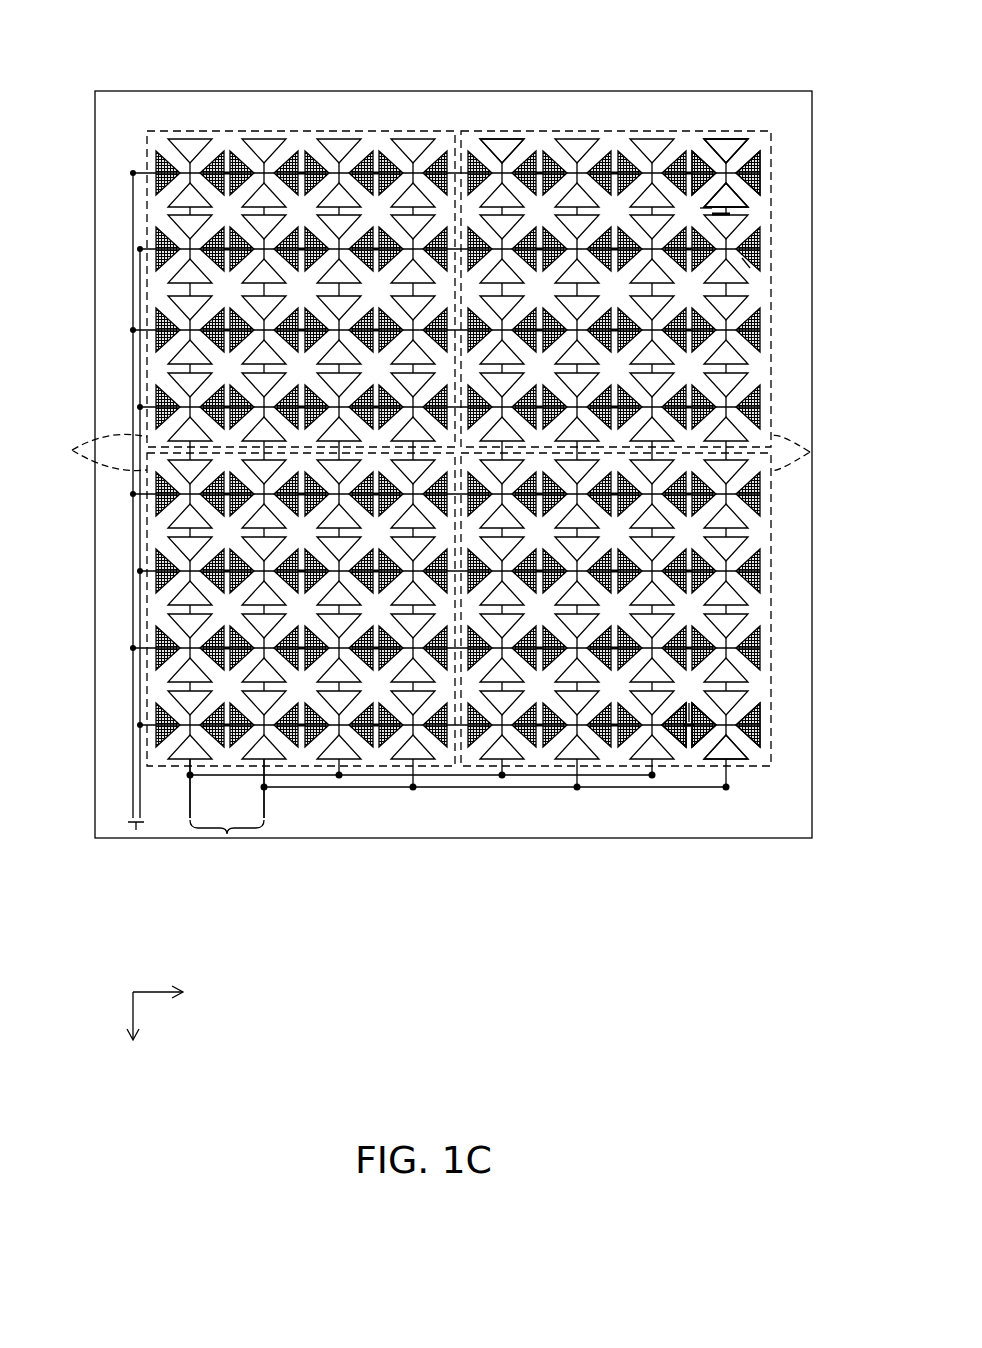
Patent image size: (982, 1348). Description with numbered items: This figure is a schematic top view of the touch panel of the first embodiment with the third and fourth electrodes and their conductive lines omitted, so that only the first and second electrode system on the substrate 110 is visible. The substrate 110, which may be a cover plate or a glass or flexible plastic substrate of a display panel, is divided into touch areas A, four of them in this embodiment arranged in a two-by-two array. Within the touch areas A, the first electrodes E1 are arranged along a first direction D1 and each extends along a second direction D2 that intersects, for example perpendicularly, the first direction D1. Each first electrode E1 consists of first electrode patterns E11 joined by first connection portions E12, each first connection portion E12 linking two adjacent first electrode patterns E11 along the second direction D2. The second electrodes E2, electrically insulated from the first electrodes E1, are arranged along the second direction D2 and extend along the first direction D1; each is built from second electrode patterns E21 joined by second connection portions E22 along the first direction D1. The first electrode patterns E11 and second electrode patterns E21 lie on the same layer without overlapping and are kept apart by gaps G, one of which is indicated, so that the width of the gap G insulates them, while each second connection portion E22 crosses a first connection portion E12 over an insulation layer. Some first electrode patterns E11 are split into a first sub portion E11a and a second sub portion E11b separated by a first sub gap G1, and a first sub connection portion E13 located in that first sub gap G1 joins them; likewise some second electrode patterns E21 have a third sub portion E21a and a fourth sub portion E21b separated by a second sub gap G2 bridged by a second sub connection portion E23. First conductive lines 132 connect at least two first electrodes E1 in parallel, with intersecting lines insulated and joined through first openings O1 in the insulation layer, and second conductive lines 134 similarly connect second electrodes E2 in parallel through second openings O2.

The substrate 110 is at (119, 96).
The first conductive lines 132 is at (137, 831).
The second conductive lines 134 is at (227, 836).
The first openings O1 is at (137, 246).
The second openings O2 is at (413, 790).
The touch areas A is at (446, 452).
The first electrodes E1 is at (764, 183).
The first electrode patterns E11 is at (738, 897).
The first sub portion E11a is at (701, 744).
The second sub portion E11b is at (677, 744).
The first connection portions E12 is at (740, 738).
The first sub connection portions E13 is at (681, 720).
The second electrodes E2 is at (502, 138).
The second electrode patterns E21 is at (808, 41).
The third sub portion E21a is at (728, 160).
The fourth sub portion E21b is at (745, 196).
The second connection portions E22 is at (708, 207).
The second sub connection portions E23 is at (712, 218).
The gap G is at (742, 264).
The first sub gap G1 is at (689, 706).
The second sub gap G2 is at (703, 213).
The first direction D1 is at (133, 1034).
The second direction D2 is at (176, 993).